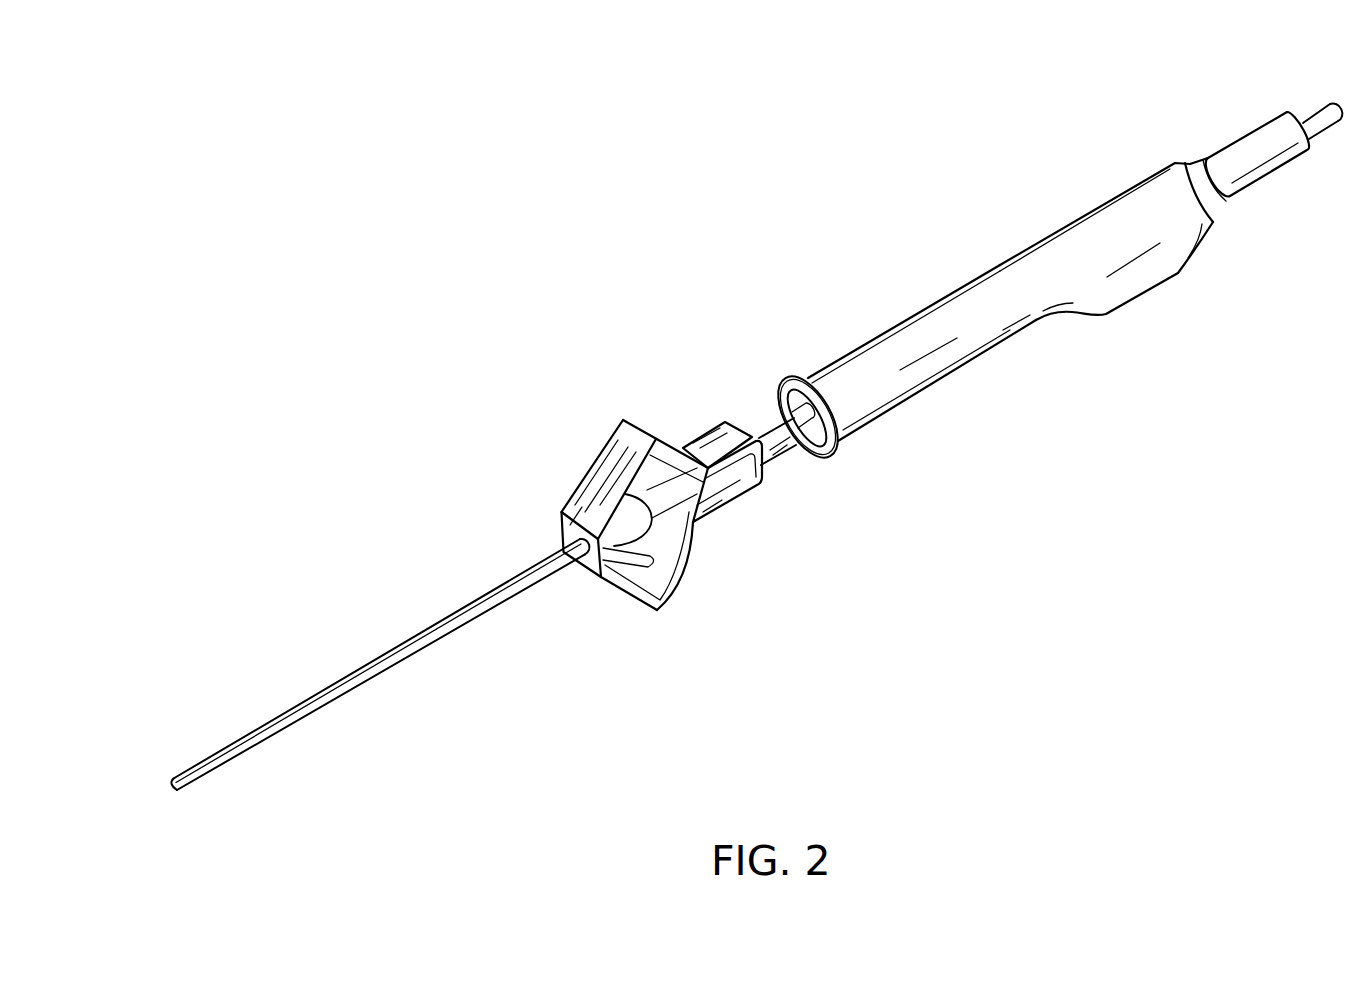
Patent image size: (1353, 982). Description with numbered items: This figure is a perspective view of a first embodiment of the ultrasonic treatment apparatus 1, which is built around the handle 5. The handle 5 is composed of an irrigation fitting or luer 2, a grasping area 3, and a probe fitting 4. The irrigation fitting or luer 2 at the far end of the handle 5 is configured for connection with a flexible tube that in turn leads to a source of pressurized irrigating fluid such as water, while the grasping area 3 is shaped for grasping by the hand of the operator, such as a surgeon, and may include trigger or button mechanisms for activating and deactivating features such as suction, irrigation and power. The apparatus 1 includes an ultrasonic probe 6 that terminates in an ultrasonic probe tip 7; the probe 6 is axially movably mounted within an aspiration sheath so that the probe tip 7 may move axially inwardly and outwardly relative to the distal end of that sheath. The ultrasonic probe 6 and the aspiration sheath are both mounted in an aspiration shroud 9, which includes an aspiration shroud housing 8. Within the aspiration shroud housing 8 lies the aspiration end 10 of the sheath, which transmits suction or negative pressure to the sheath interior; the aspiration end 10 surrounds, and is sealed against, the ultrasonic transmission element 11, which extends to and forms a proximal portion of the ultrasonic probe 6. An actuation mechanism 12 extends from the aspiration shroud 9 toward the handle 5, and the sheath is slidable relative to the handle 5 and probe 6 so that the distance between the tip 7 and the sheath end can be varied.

The ultrasonic treatment apparatus 1 is at (518, 337).
The irrigation fitting or luer 2 is at (1266, 176).
The grasping area 3 is at (1131, 212).
The probe fitting 4 is at (867, 390).
The handle 5 is at (996, 406).
The ultrasonic probe 6 is at (297, 708).
The ultrasonic probe tip 7 is at (168, 787).
The aspiration shroud housing 8 is at (587, 557).
The aspiration shroud 9 is at (693, 681).
The aspiration end 10 is at (653, 567).
The ultrasonic transmission element 11 is at (663, 507).
The actuation mechanism 12 is at (784, 456).